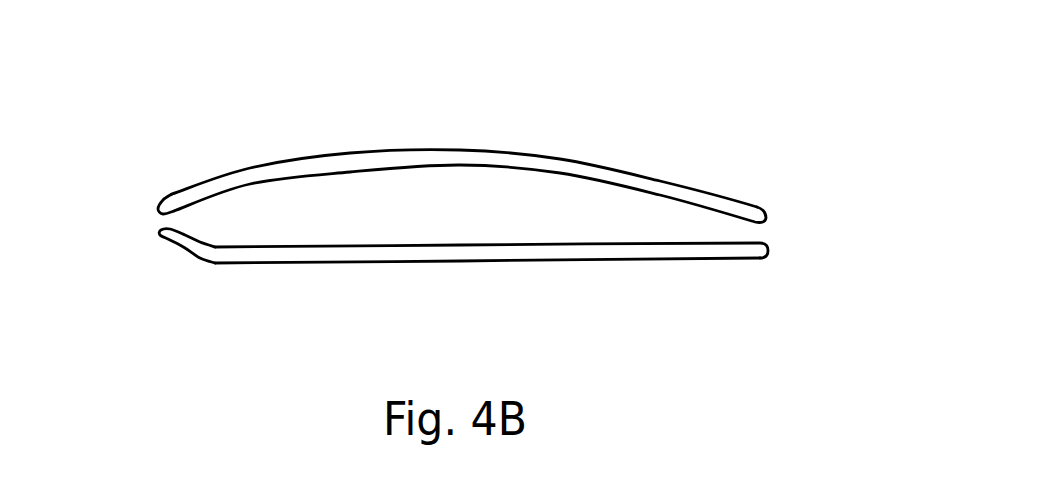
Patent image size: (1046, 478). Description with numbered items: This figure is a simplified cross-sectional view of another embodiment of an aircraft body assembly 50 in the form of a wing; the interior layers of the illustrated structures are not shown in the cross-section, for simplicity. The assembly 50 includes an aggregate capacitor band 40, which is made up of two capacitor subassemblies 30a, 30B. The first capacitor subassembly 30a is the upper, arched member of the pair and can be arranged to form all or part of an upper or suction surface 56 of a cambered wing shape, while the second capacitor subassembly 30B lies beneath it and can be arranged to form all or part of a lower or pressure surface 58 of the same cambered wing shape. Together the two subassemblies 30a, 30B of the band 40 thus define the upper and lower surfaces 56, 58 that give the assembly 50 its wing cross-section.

The aircraft body assembly 50 is at (465, 186).
The aggregate capacitor band 40 is at (185, 254).
The capacitor subassembly 30a is at (463, 152).
The capacitor subassembly 30B is at (493, 262).
The upper or suction surface 56 is at (650, 162).
The lower or pressure surface 58 is at (333, 266).